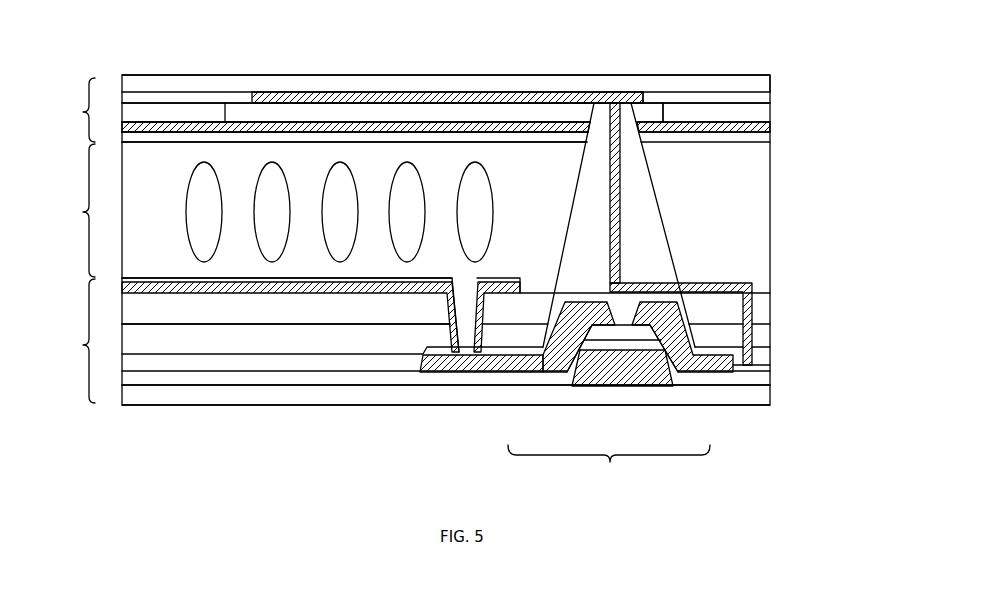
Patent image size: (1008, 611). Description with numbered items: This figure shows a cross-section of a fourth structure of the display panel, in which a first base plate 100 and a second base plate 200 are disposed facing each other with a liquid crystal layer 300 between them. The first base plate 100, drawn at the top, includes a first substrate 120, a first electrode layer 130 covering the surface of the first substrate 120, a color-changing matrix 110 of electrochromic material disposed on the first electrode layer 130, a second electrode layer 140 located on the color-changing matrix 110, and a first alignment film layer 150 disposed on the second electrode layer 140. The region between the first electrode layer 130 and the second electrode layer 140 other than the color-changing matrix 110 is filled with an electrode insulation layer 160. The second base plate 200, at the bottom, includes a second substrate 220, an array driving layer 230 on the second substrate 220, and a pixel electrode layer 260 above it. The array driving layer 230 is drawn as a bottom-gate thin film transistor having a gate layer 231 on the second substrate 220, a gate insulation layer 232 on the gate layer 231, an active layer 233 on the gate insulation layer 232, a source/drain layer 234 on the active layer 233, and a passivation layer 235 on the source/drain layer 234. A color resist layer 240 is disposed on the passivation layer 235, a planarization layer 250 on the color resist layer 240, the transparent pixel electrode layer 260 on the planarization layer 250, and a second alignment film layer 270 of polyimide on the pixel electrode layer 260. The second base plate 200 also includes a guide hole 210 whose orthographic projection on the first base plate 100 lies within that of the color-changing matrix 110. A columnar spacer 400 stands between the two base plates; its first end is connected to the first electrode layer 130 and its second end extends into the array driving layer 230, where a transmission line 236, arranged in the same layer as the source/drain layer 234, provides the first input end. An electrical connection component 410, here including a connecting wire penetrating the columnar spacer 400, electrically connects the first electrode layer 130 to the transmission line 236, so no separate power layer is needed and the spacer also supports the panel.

The first base plate 100 is at (69, 110).
The color-changing matrix 110 is at (298, 112).
The first substrate 120 is at (745, 84).
The first electrode layer 130 is at (440, 92).
The second electrode layer 140 is at (360, 122).
The first alignment film layer 150 is at (520, 138).
The electrode insulation layer 160 is at (697, 115).
The second base plate 200 is at (68, 341).
The guide hole 210 is at (469, 340).
The second substrate 220 is at (320, 398).
The array driving layer 230 is at (609, 471).
The gate layer 231 is at (648, 380).
The gate insulation layer 232 is at (555, 375).
The active layer 233 is at (602, 332).
The source/drain layer 234 is at (700, 372).
The passivation layer 235 is at (515, 352).
The transmission line 236 is at (770, 367).
The color resist layer 240 is at (172, 343).
The planarization layer 250 is at (390, 315).
The pixel electrode layer 260 is at (362, 293).
The second alignment film layer 270 is at (285, 280).
The liquid crystal layer 300 is at (68, 210).
The columnar spacer 400 is at (635, 260).
The electrical connection component 410 is at (622, 216).